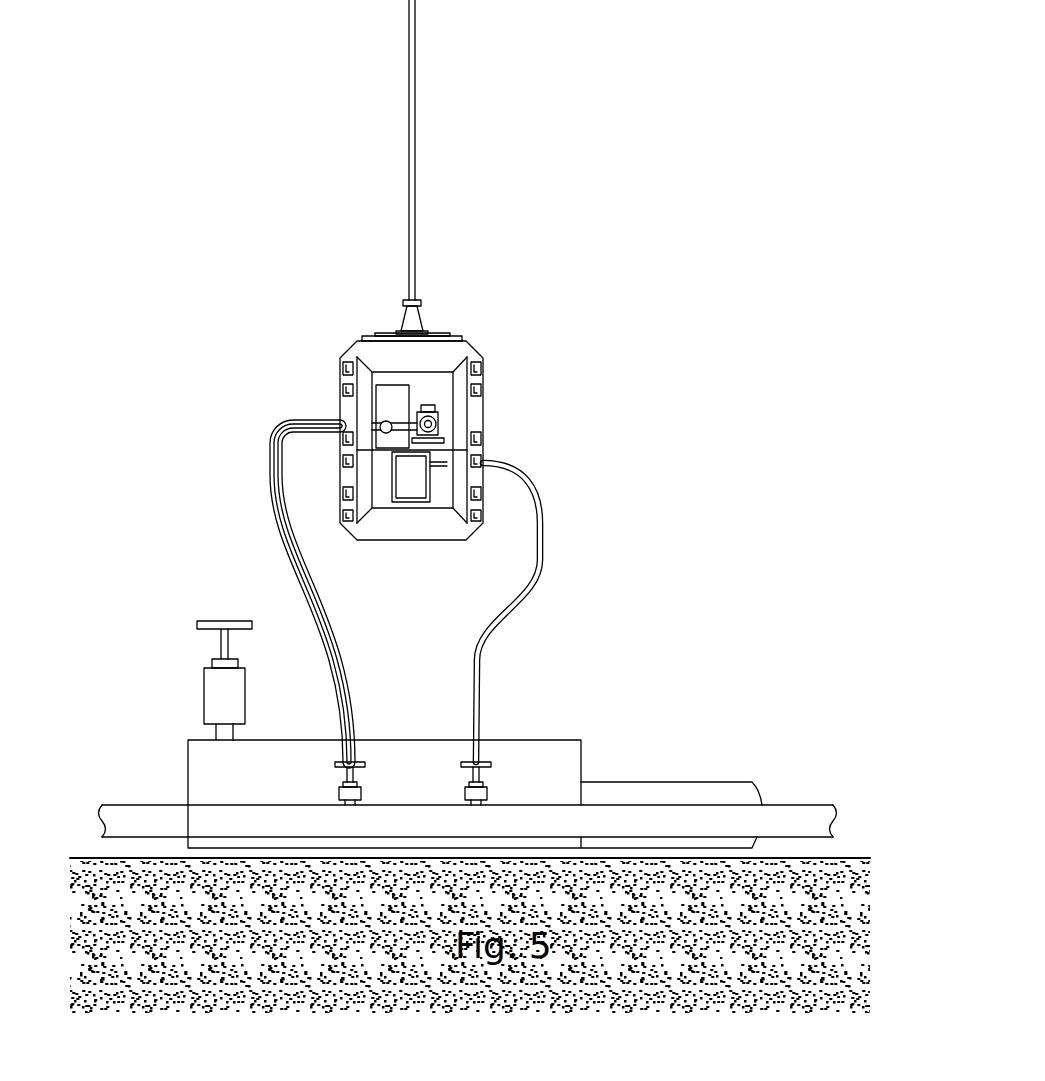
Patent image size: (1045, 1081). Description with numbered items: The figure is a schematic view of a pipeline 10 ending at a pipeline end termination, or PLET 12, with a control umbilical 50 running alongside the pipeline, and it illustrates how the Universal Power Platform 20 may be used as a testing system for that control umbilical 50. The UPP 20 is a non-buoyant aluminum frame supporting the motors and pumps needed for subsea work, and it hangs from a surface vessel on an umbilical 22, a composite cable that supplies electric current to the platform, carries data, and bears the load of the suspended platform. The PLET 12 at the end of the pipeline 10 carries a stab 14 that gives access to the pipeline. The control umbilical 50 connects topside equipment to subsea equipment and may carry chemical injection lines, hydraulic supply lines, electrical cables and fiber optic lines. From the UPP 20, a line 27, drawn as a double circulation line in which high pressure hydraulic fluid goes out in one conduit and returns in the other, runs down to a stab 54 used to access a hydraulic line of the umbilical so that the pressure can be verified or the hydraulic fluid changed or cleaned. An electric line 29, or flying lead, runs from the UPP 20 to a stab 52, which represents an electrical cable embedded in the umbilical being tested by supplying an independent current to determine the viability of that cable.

The pipeline 10 is at (647, 774).
The PLET 12 is at (545, 755).
The stab 14 is at (222, 693).
The Universal Power Platform 20 is at (473, 402).
The umbilical 22 is at (415, 143).
The line 27 is at (287, 543).
The electric line 29 is at (540, 573).
The control umbilical 50 is at (788, 799).
The stab 52 is at (480, 790).
The stab 54 is at (357, 790).